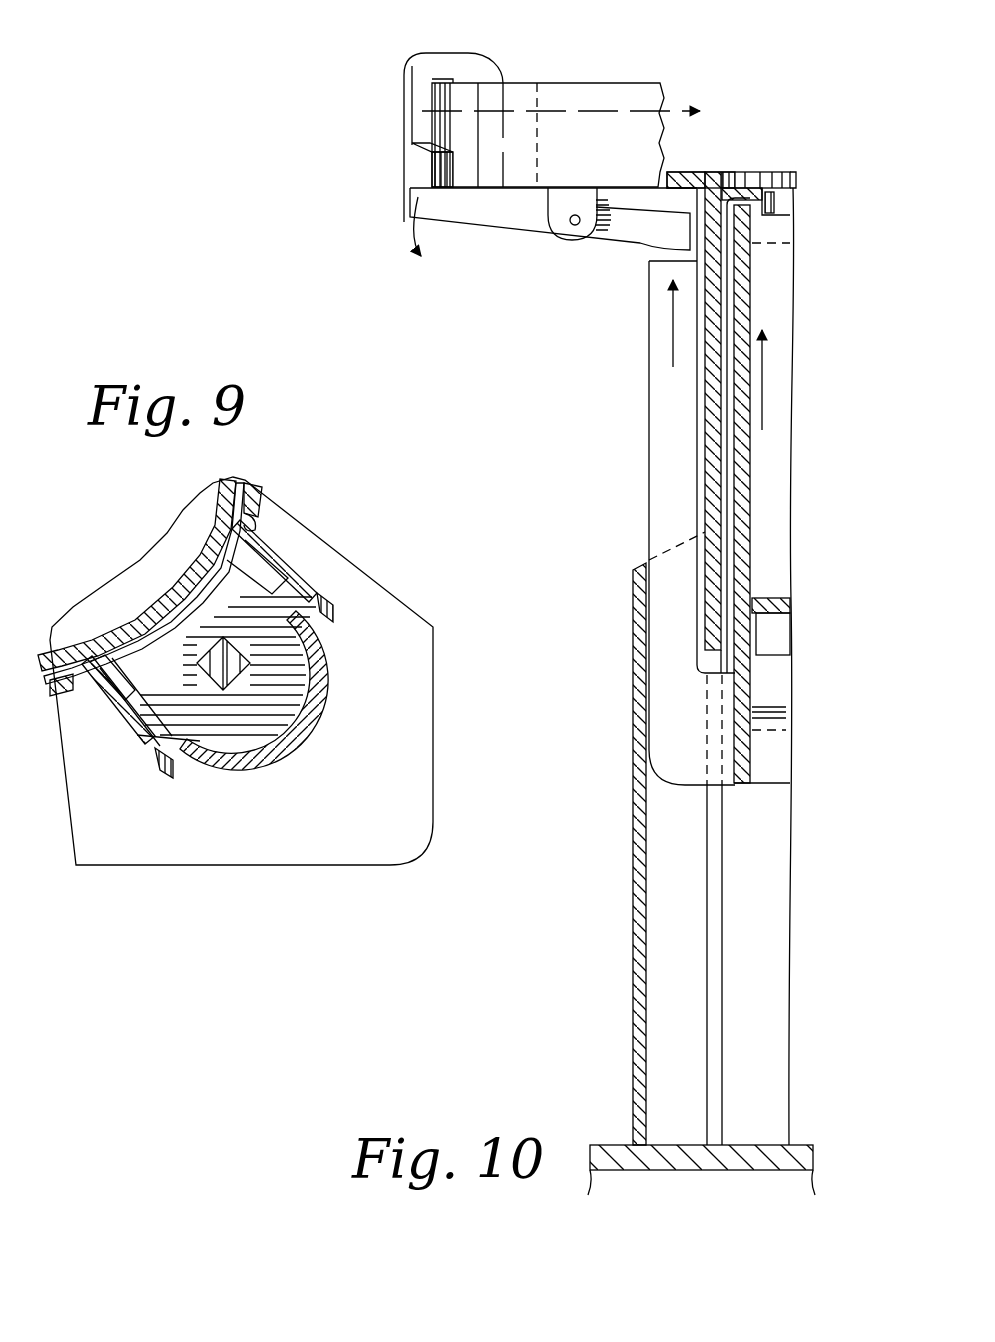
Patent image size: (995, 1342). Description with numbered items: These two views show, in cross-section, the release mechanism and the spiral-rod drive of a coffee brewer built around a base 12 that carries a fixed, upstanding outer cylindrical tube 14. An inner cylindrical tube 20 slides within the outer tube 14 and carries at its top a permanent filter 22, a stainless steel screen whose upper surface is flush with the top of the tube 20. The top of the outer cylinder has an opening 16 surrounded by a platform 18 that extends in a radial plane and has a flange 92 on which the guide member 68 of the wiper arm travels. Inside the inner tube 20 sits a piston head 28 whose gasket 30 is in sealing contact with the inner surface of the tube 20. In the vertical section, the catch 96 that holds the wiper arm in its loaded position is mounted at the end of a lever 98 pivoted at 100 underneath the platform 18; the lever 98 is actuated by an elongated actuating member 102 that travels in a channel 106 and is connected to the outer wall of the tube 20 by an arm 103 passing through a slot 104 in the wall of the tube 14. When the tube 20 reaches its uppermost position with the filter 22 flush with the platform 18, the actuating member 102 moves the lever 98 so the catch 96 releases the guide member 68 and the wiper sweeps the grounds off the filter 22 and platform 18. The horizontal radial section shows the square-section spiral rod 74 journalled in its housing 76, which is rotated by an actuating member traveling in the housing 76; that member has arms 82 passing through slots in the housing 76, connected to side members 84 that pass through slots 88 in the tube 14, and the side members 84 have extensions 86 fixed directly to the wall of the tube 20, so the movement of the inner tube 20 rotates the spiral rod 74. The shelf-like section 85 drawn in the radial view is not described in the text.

In FIG. 10, the base 12 is at (612, 1138).
In FIG. 9, the base 12 is at (338, 872).
In FIG. 10, the outer cylindrical tube 14 is at (698, 382).
In FIG. 9, the outer cylindrical tube 14 is at (263, 484).
In FIG. 10, the opening 16 is at (765, 175).
In FIG. 10, the platform 18 is at (725, 172).
In FIG. 10, the inner cylindrical tube 20 is at (758, 301).
In FIG. 9, the inner cylindrical tube 20 is at (233, 476).
In FIG. 10, the permanent filter 22 is at (790, 214).
In FIG. 10, the piston head 28 is at (782, 600).
In FIG. 10, the gasket 30 is at (776, 636).
In FIG. 10, the guide member 68 is at (455, 60).
In FIG. 9, the spiral rod 74 is at (248, 678).
In FIG. 9, the housing 76 is at (322, 668).
In FIG. 9, the arms 82 is at (297, 587).
In FIG. 9, the side members 84 is at (333, 610).
In FIG. 9, the shelf 85 is at (207, 763).
In FIG. 9, the extensions 86 is at (260, 542).
In FIG. 9, the slots 88 is at (258, 528).
In FIG. 10, the flange 92 is at (598, 95).
In FIG. 10, the catch 96 is at (420, 160).
In FIG. 10, the lever 98 is at (630, 228).
In FIG. 10, the pivot 100 is at (572, 226).
In FIG. 10, the elongated actuating member 102 is at (667, 487).
In FIG. 10, the arm 103 is at (672, 740).
In FIG. 10, the slot 104 is at (717, 930).
In FIG. 10, the channel 106 is at (635, 872).